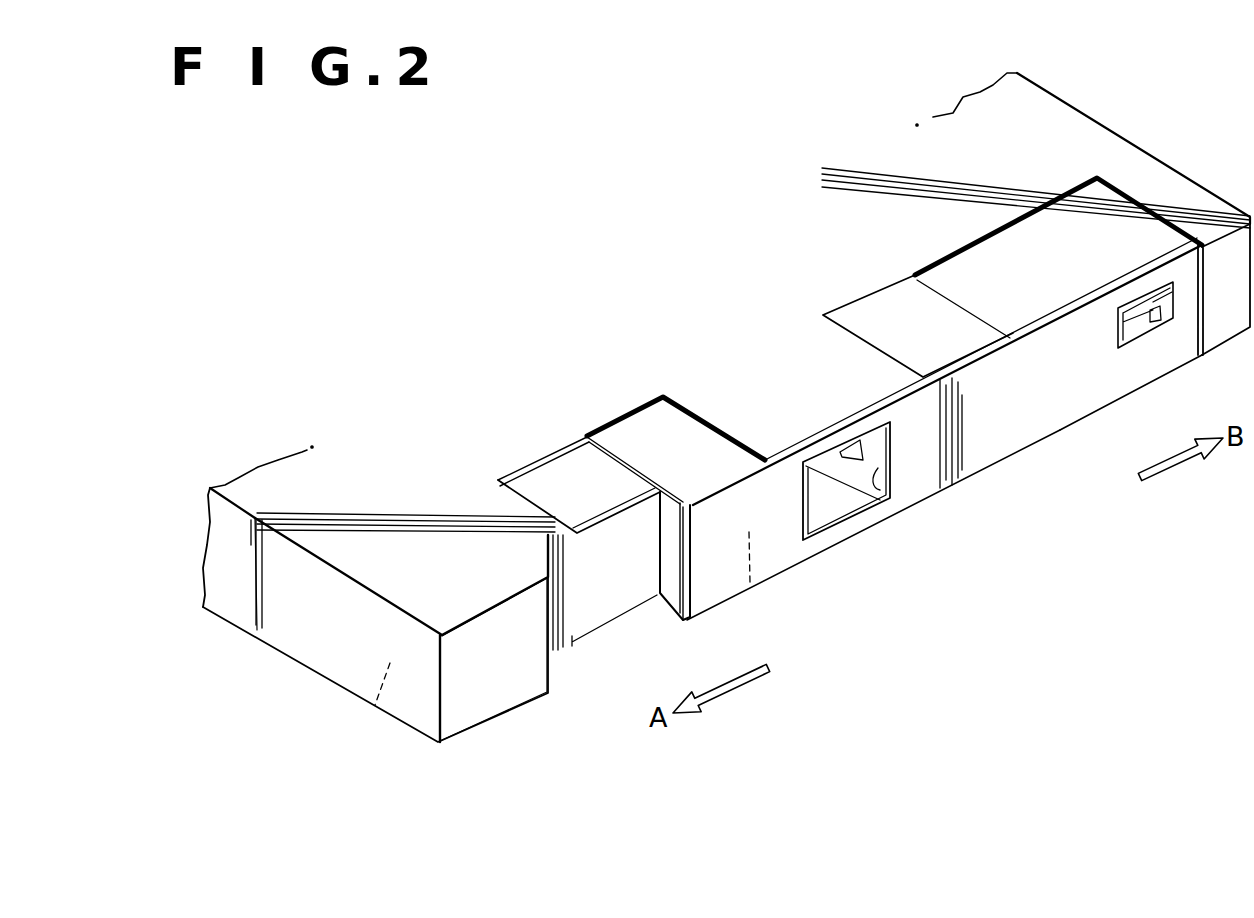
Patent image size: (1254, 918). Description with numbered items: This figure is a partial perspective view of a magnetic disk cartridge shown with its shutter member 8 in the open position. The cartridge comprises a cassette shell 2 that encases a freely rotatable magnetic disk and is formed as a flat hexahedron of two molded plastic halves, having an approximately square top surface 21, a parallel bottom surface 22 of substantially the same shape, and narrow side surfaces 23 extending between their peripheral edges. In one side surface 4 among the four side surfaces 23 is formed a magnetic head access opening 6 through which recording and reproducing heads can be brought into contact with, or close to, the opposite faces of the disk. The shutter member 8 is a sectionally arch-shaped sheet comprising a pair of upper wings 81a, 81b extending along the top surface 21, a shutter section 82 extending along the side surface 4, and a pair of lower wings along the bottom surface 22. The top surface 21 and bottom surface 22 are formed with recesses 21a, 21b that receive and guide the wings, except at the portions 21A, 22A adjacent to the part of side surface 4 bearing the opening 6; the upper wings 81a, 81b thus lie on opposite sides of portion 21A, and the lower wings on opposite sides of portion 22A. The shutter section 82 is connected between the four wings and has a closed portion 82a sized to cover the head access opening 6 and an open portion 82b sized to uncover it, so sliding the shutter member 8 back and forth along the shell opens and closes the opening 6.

The cassette shell 2 is at (1063, 136).
The top surface 21 is at (377, 487).
The recess 21a is at (560, 472).
The recess 21b is at (882, 315).
The portion of the top surface 21A is at (757, 377).
The bottom surface 22 is at (377, 705).
The portion of the bottom surface 22A is at (750, 584).
The side surfaces 23 is at (322, 627).
The side surface 4 is at (522, 682).
The magnetic head access opening 6 is at (833, 505).
The shutter member 8 is at (1107, 410).
The upper wing 81a is at (647, 440).
The upper wing 81b is at (977, 267).
The shutter section 82 is at (1058, 407).
The closed portion 82a is at (978, 450).
The open portion 82b is at (905, 502).